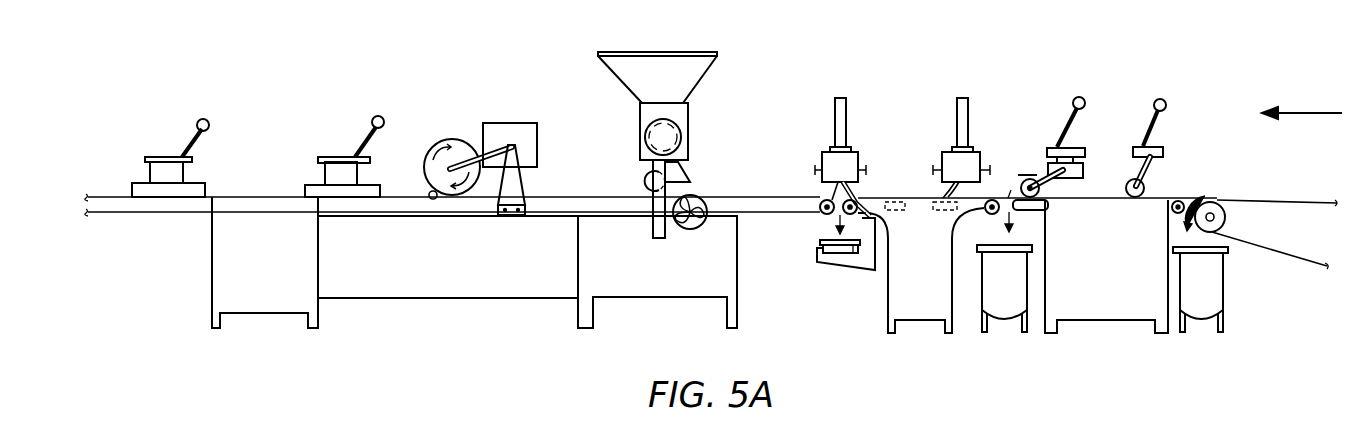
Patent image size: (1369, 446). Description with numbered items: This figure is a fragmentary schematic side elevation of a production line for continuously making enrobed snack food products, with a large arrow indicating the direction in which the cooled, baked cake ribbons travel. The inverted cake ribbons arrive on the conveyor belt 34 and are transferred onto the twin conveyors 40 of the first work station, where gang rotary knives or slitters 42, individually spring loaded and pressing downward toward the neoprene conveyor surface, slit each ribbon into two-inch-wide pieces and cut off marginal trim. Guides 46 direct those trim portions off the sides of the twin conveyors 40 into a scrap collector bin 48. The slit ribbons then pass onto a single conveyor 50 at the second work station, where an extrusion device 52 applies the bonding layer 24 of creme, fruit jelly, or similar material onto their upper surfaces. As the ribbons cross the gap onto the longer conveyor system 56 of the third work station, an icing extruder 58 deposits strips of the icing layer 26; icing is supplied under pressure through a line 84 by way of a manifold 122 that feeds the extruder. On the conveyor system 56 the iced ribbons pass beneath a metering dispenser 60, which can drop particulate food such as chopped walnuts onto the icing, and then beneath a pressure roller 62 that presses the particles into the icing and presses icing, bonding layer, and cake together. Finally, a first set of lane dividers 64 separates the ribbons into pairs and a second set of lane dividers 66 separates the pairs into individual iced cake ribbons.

The bonding layer 24 is at (953, 188).
The icing layer 26 is at (830, 198).
The conveyor belt 34 is at (1305, 176).
The twin conveyors 40 is at (1107, 200).
The gang rotary knives or slitters 42 is at (1163, 174).
The guides 46 is at (1040, 196).
The scrap collector bin 48 is at (1008, 310).
The single conveyor 50 is at (923, 202).
The extrusion device 52 is at (973, 150).
The conveyor system 56 is at (784, 200).
The icing extruder 58 is at (855, 158).
The metering dispenser 60 is at (700, 144).
The pressure roller 62 is at (440, 137).
The first set of lane dividers 64 is at (367, 190).
The second set of lane dividers 66 is at (193, 190).
The line 84 is at (847, 115).
The manifold 122 is at (834, 150).